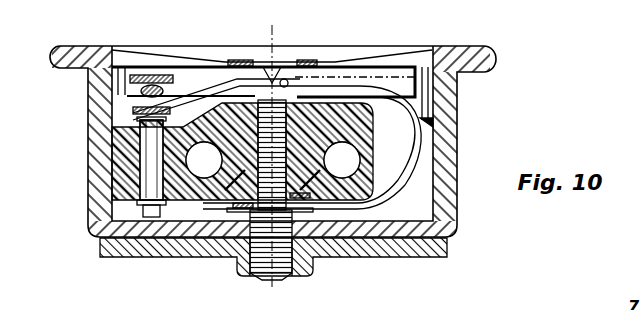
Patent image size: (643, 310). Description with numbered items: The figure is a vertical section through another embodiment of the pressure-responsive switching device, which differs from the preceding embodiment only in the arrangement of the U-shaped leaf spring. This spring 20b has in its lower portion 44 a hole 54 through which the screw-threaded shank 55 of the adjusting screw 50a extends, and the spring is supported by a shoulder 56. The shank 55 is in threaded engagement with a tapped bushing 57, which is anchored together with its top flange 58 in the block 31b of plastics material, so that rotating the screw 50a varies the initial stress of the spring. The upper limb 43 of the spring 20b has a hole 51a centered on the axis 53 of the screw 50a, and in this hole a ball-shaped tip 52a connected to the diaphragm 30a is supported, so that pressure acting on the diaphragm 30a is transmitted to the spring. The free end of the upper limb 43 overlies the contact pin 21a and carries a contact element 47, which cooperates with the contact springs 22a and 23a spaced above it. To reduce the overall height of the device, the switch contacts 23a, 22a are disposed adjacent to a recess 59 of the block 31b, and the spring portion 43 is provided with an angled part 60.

The U-shaped spring 20b is at (424, 122).
The contact pin 21a is at (150, 184).
The contact spring 22a is at (127, 93).
The contact spring 23a is at (143, 68).
The diaphragm 30a is at (333, 62).
The block of plastics material 31b is at (364, 148).
The upper limb of the spring 43 is at (350, 80).
The lower portion of the spring 44 is at (360, 212).
The contact element 47 is at (133, 115).
The adjusting screw 50a is at (250, 262).
The hole 51a is at (286, 80).
The ball-shaped tip 52a is at (270, 80).
The axis of the screw 53 is at (335, 149).
The hole 54 is at (232, 179).
The shank 55 is at (316, 179).
The shoulder 56 is at (293, 270).
The tapped bushing 57 is at (218, 152).
The top flange 58 is at (242, 151).
The recess 59 is at (200, 97).
The angled part 60 is at (217, 90).